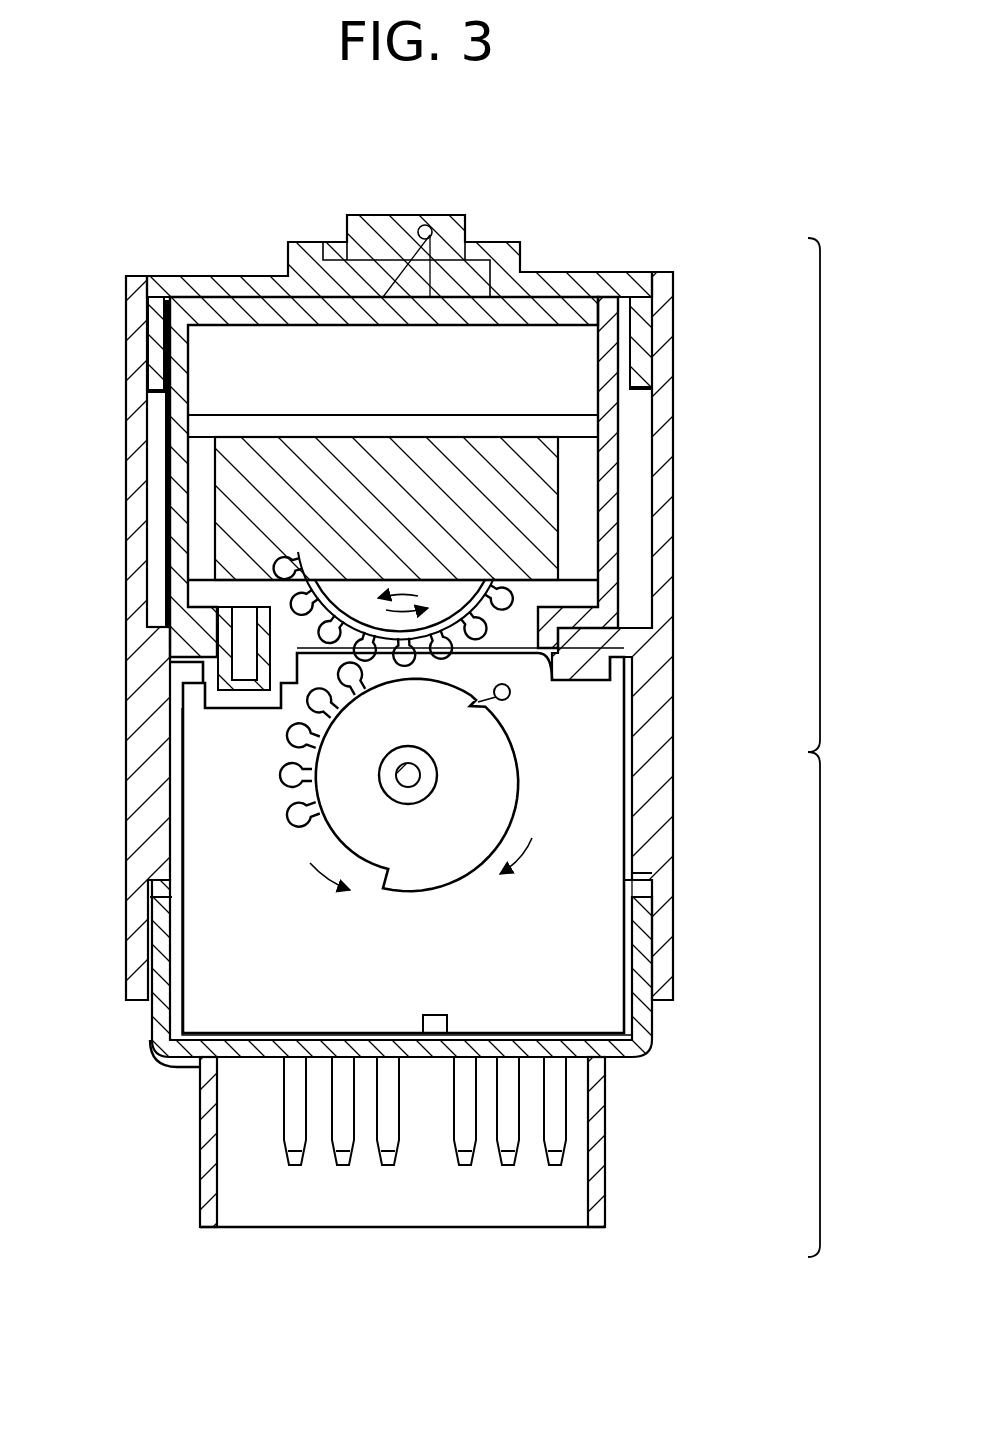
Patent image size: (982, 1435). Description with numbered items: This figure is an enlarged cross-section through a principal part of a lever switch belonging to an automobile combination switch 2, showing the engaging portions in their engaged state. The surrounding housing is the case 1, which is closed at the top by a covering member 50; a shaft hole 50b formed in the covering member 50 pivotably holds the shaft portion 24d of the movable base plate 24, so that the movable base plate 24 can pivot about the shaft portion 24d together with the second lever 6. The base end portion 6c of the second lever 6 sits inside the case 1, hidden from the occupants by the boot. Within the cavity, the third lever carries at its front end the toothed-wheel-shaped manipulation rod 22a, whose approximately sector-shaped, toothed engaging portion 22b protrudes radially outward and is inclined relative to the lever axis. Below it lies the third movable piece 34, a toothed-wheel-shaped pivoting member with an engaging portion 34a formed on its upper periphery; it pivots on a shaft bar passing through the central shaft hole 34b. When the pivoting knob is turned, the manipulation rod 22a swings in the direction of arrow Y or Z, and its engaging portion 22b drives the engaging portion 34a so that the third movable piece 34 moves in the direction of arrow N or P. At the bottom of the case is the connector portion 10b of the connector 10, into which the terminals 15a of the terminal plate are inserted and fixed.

The case 1 is at (680, 427).
The combination switch 2 is at (508, 747).
The second lever 6 is at (230, 479).
The base end portion 6c is at (213, 532).
The connector 10 is at (198, 1142).
The connector portion 10b is at (200, 1197).
The terminal 15a is at (392, 1167).
The manipulation rod 22a is at (470, 592).
The engaging portion 22b is at (470, 640).
The movable base plate 24 is at (608, 314).
The shaft portion 24d is at (400, 222).
The third movable piece 34 is at (498, 742).
The engaging portion 34a is at (285, 778).
The shaft hole 34b is at (418, 774).
The covering member 50 is at (555, 258).
The shaft hole 50b is at (425, 237).